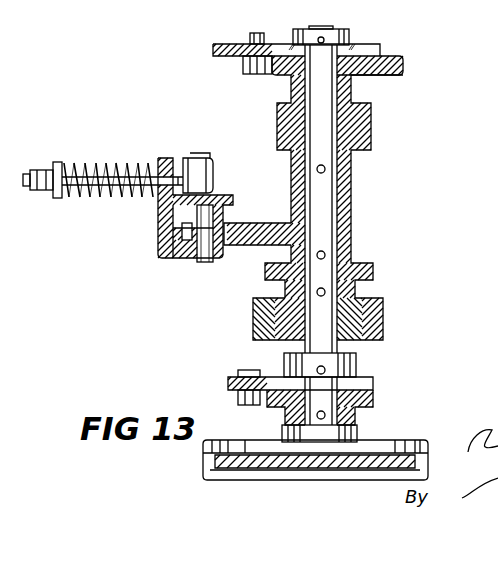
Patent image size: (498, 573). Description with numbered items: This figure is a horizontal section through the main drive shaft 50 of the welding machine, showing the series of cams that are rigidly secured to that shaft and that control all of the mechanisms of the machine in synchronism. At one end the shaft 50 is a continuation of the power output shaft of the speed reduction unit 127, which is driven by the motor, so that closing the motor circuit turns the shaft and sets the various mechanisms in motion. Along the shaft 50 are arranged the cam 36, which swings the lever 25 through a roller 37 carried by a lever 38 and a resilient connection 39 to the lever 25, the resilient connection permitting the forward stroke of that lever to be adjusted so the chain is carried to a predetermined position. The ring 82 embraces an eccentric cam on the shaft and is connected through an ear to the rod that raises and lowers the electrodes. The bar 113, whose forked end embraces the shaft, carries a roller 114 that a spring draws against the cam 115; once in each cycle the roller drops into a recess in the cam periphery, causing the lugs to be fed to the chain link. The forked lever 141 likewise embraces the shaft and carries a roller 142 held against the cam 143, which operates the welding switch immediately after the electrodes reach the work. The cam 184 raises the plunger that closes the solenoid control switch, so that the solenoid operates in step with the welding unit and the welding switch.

The lever 25 is at (232, 195).
The cam 36 is at (258, 232).
The roller 37 is at (226, 245).
The lever 38 is at (176, 257).
The resilient connection 39 is at (150, 167).
The main drive shaft 50 is at (323, 200).
The ring 82 is at (383, 313).
The bar 113 is at (214, 51).
The roller 114 is at (245, 72).
The cam 115 is at (405, 70).
The speed reduction unit 127 is at (420, 442).
The forked lever 141 is at (232, 380).
The roller 142 is at (242, 402).
The cam 143 is at (373, 398).
The cam 184 is at (343, 258).